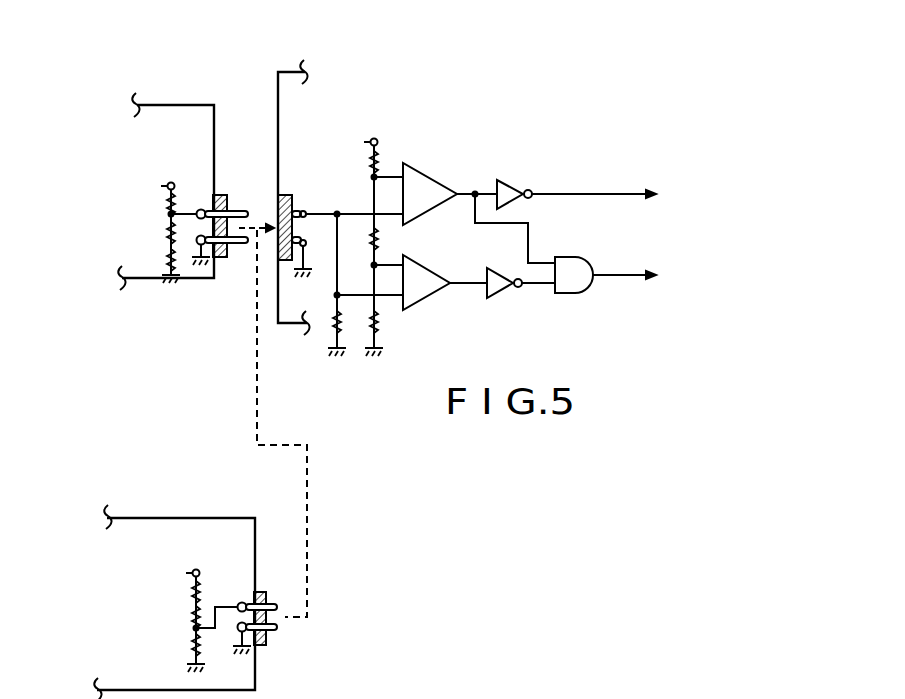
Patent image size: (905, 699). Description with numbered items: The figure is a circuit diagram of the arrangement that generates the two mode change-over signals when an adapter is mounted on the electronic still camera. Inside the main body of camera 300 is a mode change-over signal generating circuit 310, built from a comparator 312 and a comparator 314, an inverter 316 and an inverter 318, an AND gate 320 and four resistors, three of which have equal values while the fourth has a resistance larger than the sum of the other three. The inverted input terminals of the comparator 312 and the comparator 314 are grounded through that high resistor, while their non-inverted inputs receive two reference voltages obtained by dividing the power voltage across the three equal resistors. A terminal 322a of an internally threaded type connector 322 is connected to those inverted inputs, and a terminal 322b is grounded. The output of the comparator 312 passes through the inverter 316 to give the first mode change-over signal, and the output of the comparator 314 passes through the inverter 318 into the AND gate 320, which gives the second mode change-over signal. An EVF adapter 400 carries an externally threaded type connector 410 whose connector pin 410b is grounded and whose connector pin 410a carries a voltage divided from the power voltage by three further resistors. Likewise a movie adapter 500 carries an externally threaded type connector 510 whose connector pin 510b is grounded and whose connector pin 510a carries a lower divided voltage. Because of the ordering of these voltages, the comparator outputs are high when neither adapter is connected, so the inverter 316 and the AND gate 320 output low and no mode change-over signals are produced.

The main body of camera 300 is at (299, 69).
The mode change-over signal generating circuit 310 is at (515, 238).
The comparator 312 is at (437, 182).
The comparator 314 is at (437, 300).
The inverter 316 is at (517, 181).
The inverter 318 is at (513, 298).
The AND gate 320 is at (588, 293).
The internally threaded type connector 322 is at (307, 249).
The terminal 322a is at (322, 190).
The terminal 322b is at (287, 262).
The EVF adapter 400 is at (170, 103).
The externally threaded type connector 410 is at (231, 224).
The connector pin 410a is at (236, 211).
The connector pin 410b is at (228, 258).
The movie adapter 500 is at (176, 517).
The externally threaded type connector 510 is at (315, 596).
The connector pin 510a is at (277, 606).
The connector pin 510b is at (277, 630).